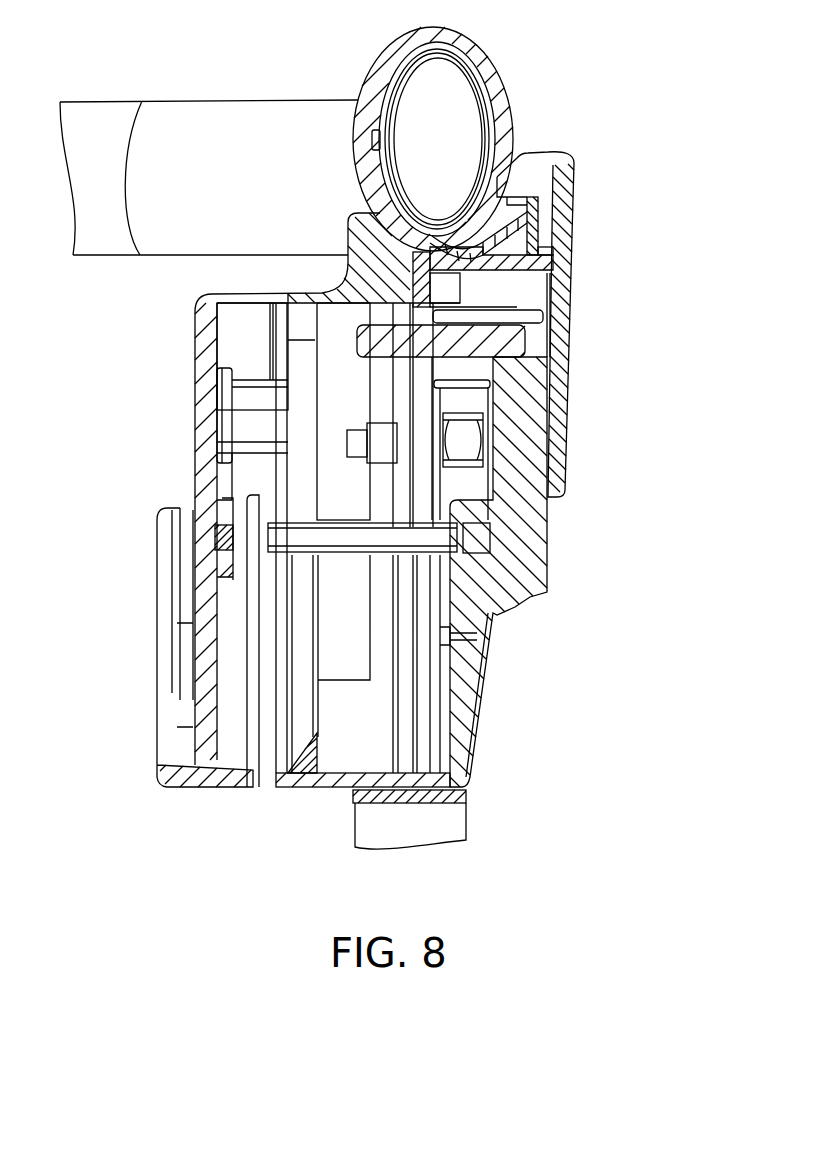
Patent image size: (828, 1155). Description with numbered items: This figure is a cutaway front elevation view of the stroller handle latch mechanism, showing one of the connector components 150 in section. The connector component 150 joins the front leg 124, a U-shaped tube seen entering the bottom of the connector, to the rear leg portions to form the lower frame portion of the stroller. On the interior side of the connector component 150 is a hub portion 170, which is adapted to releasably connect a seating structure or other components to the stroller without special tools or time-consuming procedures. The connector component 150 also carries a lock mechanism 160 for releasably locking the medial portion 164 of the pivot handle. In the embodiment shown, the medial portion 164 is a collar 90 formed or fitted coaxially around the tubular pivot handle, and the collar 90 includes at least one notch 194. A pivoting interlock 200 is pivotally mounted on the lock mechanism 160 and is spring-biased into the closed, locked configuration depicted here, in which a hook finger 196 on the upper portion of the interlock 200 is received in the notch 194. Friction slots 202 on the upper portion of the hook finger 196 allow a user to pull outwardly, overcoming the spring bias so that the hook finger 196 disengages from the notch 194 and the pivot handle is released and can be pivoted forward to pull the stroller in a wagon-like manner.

The ring 90 is at (463, 38).
The medial portion 164 is at (520, 104).
The notch 194 is at (498, 185).
The friction slots 202 is at (566, 176).
The hook finger 196 is at (568, 186).
The pivoting interlock 200 is at (562, 233).
The lock mechanism 160 is at (602, 409).
The connector component 150 is at (540, 684).
The hub portion 170 is at (162, 739).
The front leg 124 is at (453, 817).